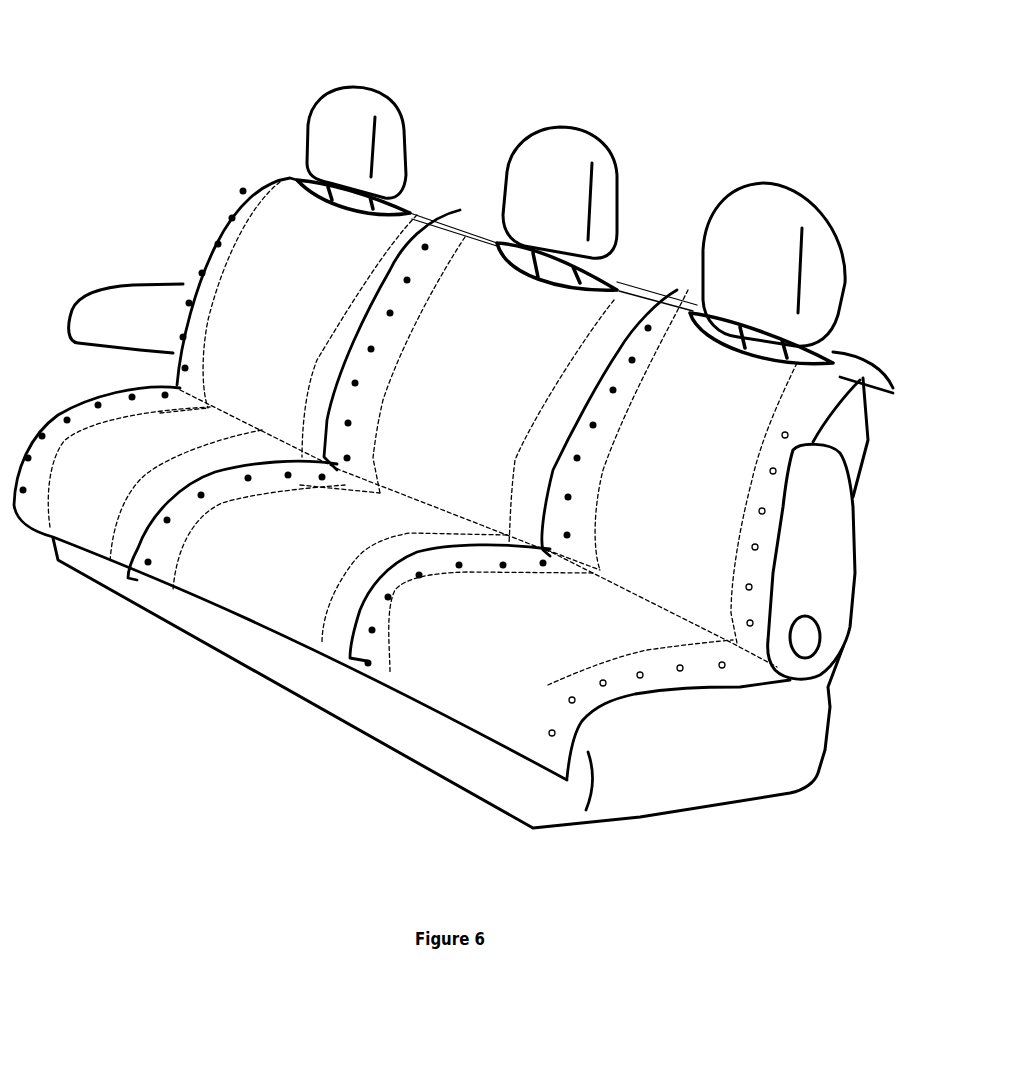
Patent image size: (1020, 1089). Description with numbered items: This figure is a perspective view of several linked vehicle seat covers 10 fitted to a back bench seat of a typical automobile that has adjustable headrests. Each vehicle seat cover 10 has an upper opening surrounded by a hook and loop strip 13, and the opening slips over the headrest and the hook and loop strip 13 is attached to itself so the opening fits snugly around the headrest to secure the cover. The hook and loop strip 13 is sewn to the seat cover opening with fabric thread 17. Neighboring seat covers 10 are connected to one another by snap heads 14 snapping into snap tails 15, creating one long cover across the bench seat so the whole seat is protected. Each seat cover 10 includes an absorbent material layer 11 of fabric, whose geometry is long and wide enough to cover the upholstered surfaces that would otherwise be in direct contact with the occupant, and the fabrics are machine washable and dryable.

The vehicle seat cover 10 is at (492, 753).
The absorbent material layer 11 is at (260, 287).
The hook and loop strip 13 is at (697, 307).
The snap head 14 is at (203, 273).
The snap tail 15 is at (552, 733).
The fabric thread 17 is at (262, 210).